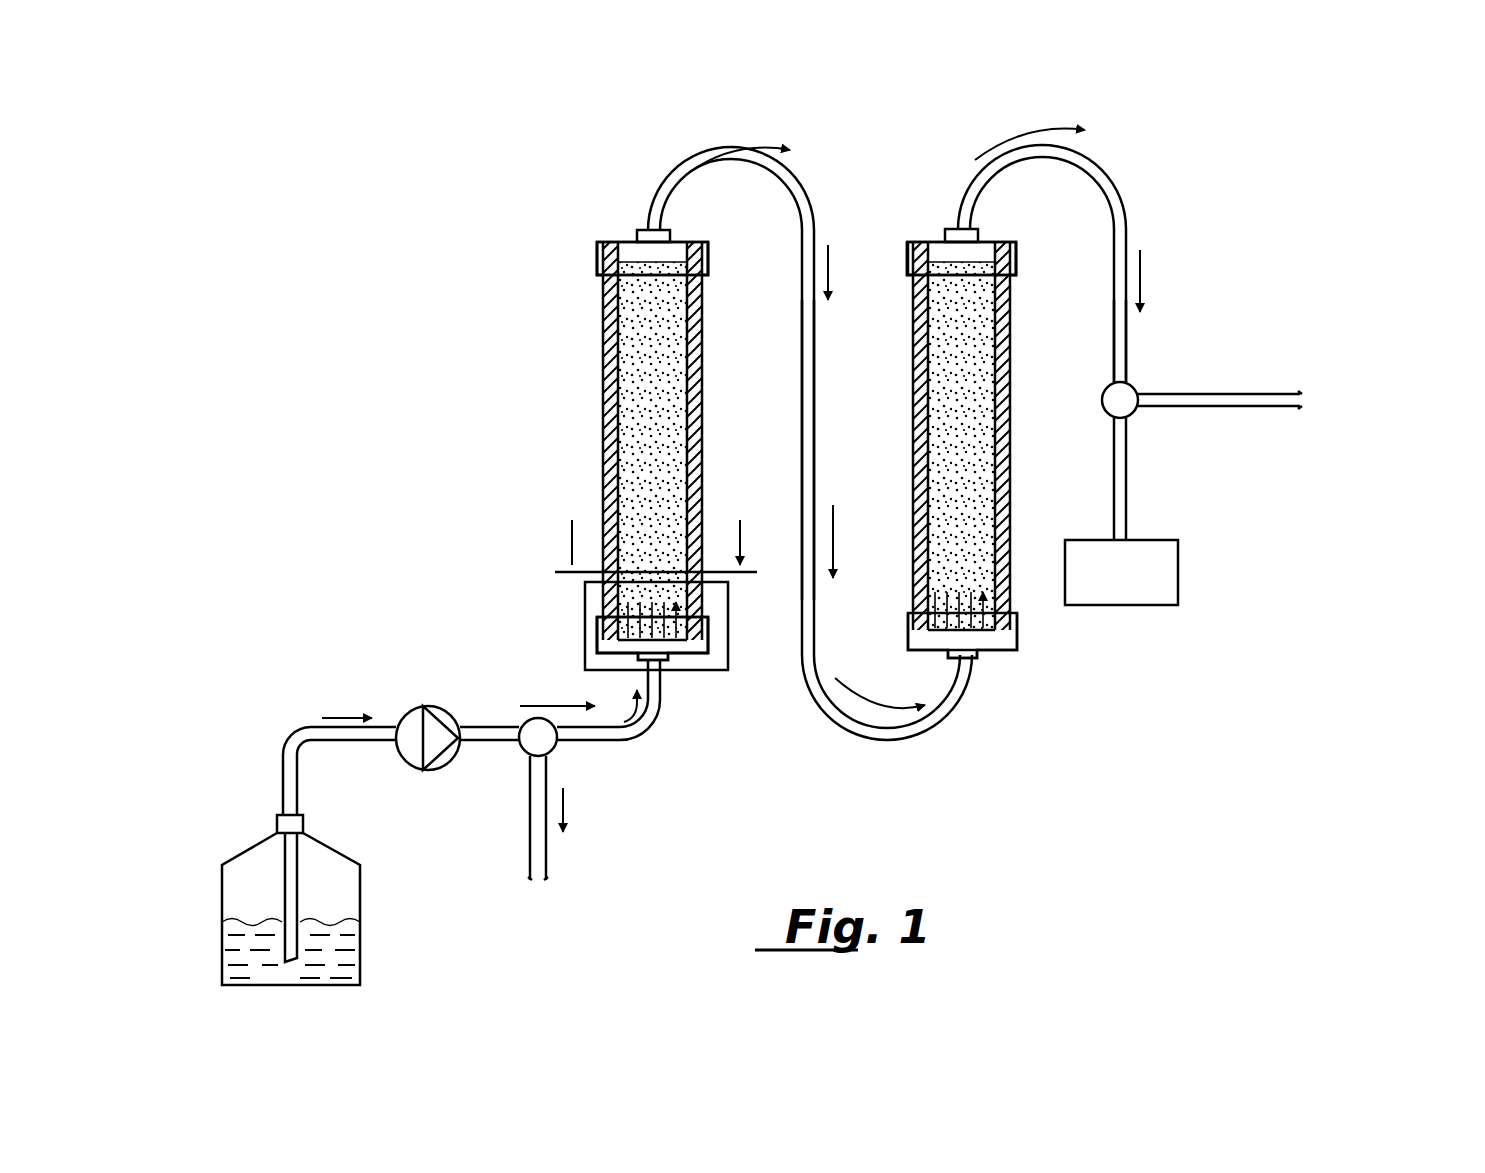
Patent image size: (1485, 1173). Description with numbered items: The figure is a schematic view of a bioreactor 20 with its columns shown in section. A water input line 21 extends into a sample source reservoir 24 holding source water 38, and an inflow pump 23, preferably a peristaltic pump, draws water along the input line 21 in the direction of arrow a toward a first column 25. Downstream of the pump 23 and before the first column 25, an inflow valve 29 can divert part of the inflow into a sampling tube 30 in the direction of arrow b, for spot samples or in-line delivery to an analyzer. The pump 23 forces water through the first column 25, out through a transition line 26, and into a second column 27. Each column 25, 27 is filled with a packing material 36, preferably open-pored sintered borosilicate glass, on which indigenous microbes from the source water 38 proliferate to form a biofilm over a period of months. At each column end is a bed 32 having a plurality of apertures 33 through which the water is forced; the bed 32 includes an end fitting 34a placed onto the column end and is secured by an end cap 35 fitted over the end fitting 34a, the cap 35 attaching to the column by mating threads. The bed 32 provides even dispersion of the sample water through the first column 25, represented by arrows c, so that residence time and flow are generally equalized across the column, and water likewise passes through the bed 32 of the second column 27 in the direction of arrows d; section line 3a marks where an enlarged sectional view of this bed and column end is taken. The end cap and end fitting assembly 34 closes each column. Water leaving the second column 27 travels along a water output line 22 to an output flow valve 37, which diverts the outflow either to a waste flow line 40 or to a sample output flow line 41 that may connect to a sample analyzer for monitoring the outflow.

The bioreactor 20 is at (884, 182).
The water input line 21 is at (296, 738).
The water output line 22 is at (1120, 206).
The inflow pump 23 is at (428, 722).
The sample source reservoir 24 is at (260, 864).
The first column 25 is at (598, 420).
The transition line 26 is at (812, 376).
The second column 27 is at (1012, 370).
The inflow valve 29 is at (525, 754).
The sampling tube 30 is at (536, 840).
The bed 32 is at (630, 238).
The apertures 33 is at (607, 272).
The end cap 34 is at (720, 652).
The end fitting 34a is at (643, 232).
The end cap 35 is at (705, 256).
The packing material 36 is at (668, 448).
The output flow valve 37 is at (1140, 380).
The source water 38 is at (345, 947).
The waste flow line 40 is at (1126, 488).
The sample output flow line 41 is at (1247, 402).
The water inflow arrow a is at (344, 714).
The diverted flow arrow b is at (566, 807).
The dispersion arrows c is at (680, 622).
The flow arrows d is at (990, 620).
The section line 3a is at (656, 528).